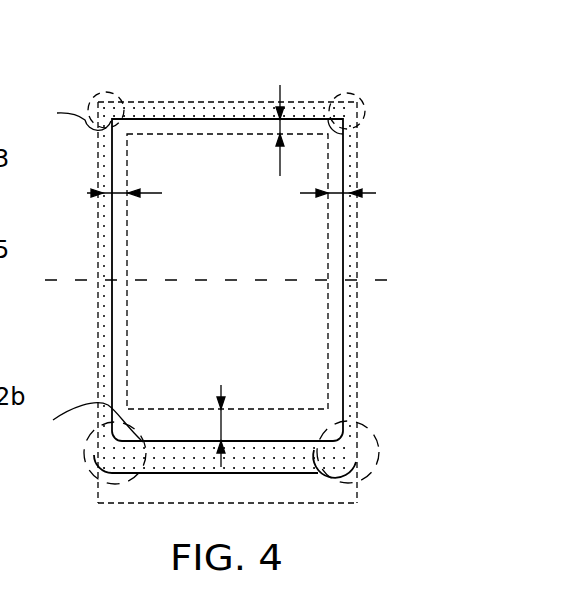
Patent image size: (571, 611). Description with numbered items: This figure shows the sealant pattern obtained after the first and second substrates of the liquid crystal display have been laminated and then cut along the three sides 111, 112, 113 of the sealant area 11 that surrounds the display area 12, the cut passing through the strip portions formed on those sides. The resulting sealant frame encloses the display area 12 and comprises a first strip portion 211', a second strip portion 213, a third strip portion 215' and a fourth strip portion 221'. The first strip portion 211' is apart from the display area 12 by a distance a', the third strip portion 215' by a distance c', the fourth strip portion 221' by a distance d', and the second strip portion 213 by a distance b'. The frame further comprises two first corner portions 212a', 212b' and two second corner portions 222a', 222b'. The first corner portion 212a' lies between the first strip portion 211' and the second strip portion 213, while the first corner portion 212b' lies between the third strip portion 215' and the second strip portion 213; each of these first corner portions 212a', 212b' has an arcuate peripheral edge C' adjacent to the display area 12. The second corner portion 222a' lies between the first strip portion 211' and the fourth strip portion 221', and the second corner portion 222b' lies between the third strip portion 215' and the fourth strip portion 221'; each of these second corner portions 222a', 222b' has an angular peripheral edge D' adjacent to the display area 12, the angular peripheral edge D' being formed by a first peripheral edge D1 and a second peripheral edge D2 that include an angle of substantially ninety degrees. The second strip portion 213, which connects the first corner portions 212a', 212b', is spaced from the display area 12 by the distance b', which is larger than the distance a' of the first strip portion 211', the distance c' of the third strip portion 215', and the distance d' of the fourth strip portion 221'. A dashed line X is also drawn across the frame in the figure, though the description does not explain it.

The sealant area 11 is at (255, 127).
The display area 12 is at (167, 153).
The side of the sealant area 111 is at (213, 103).
The side of the sealant area 112 is at (100, 223).
The side of the sealant area 113 is at (356, 208).
The first strip portion 211' is at (71, 302).
The second strip portion 213 is at (302, 463).
The third strip portion 215' is at (387, 302).
The fourth strip portion 221' is at (227, 73).
The second corner portion 222a' is at (79, 82).
The second corner portion 222b' is at (379, 82).
The first corner portion 212a' is at (74, 453).
The first corner portion 212b' is at (375, 470).
The first peripheral edge D1 is at (137, 122).
The second peripheral edge D2 is at (106, 153).
The angular peripheral edge D' is at (69, 120).
The arcuate peripheral edge C' is at (86, 422).
The reference axis X is at (232, 282).
The distance a' is at (124, 180).
The distance b' is at (231, 426).
The distance c' is at (338, 179).
The distance d' is at (271, 130).